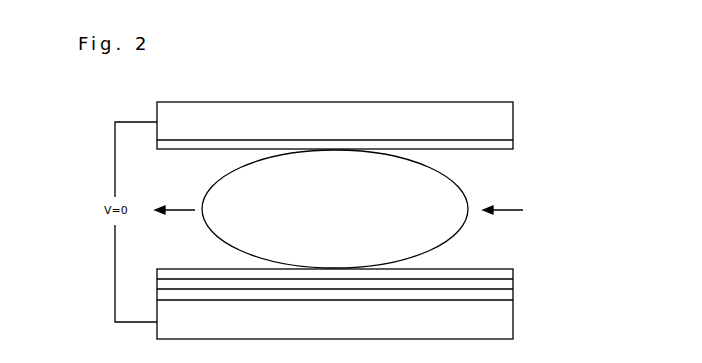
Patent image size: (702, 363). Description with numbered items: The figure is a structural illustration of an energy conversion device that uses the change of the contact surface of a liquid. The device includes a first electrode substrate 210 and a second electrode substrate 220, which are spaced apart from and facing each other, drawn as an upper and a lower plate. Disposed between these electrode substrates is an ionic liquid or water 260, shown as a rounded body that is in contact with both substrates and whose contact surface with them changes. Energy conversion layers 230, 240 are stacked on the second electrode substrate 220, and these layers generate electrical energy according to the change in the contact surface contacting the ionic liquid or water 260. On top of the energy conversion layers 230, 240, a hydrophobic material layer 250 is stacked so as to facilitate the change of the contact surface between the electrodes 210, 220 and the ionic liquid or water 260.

The first electrode substrate 210 is at (513, 121).
The second electrode substrate 220 is at (513, 320).
The energy conversion layer 230 is at (513, 292).
The energy conversion layer 240 is at (513, 280).
The hydrophobic material layer 250 is at (513, 270).
The ionic liquid or water 260 is at (215, 183).